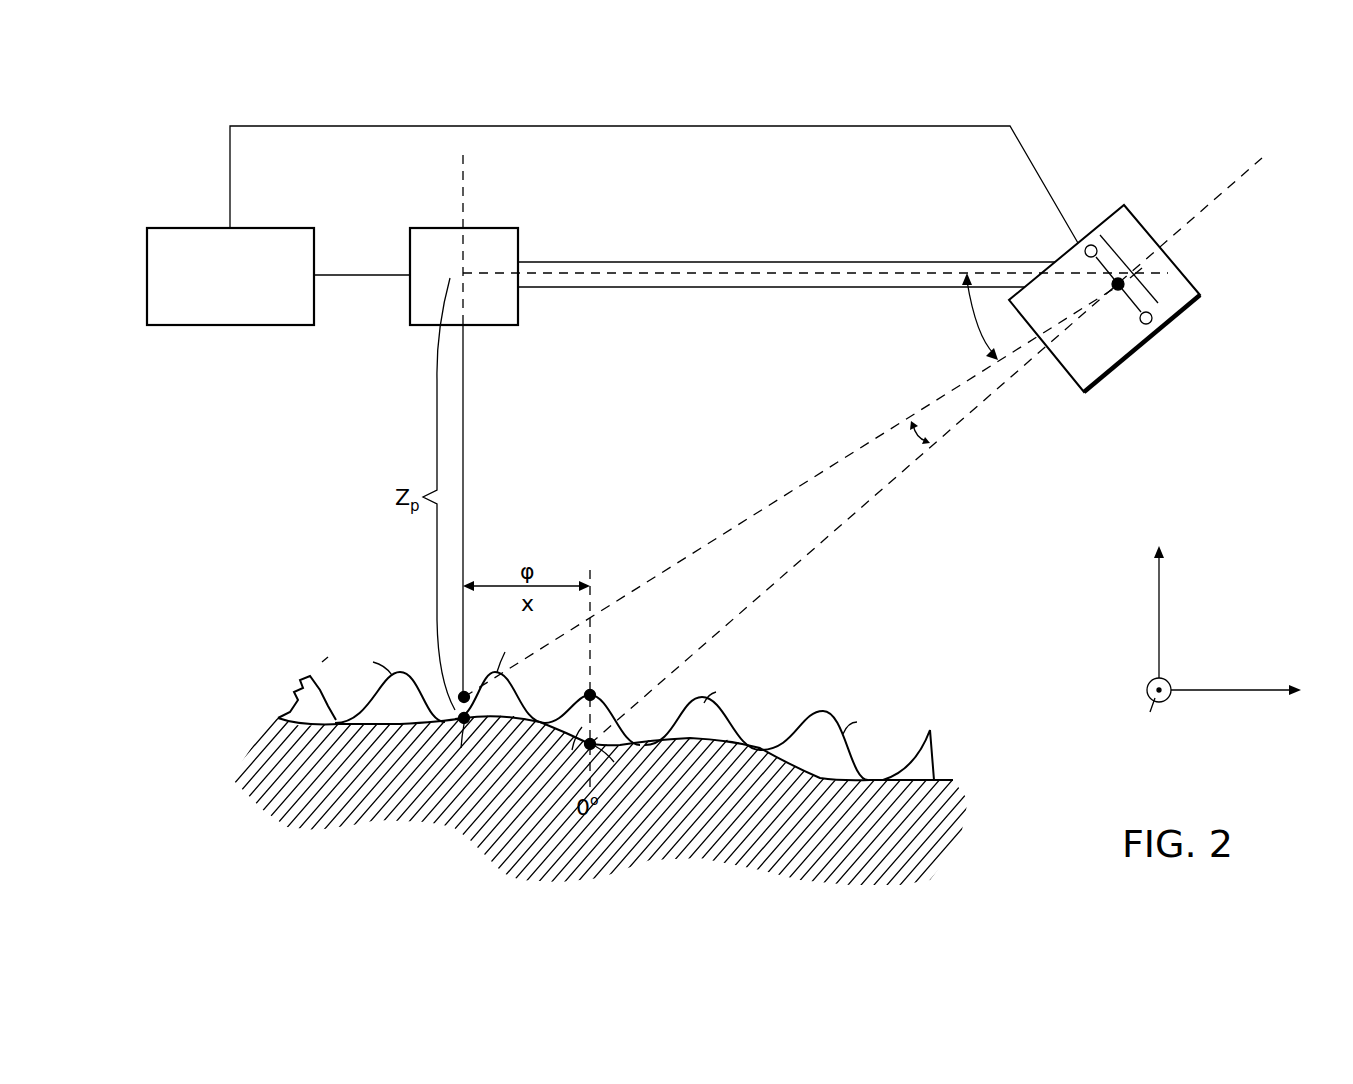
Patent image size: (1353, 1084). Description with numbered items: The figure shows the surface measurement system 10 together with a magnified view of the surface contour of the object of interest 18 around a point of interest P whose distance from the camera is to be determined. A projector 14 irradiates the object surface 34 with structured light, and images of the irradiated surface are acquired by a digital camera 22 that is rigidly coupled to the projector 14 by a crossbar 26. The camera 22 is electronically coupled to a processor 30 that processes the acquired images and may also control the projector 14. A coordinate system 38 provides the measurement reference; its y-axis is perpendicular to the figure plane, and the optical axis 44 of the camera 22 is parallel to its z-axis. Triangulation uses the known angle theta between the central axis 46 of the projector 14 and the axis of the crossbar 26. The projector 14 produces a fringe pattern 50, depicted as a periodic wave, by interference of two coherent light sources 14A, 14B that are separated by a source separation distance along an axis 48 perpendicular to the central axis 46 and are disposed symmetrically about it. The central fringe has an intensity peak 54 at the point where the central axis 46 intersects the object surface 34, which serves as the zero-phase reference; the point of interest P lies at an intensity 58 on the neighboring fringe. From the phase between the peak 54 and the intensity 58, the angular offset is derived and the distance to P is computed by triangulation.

The surface measurement system 10 is at (121, 168).
The projector 14 is at (1107, 379).
The coherent light source 14A is at (1091, 244).
The coherent light source 14B is at (1152, 324).
The object of interest 18 is at (567, 859).
The digital camera 22 is at (410, 238).
The crossbar 26 is at (675, 288).
The processor 30 is at (225, 325).
The object surface 34 is at (965, 768).
The coordinate system 38 is at (1251, 582).
The optical axis 44 is at (463, 180).
The central axis 46 is at (1245, 178).
The axis 48 is at (1118, 292).
The fringe pattern 50 is at (772, 707).
The intensity peak 54 is at (593, 693).
The intensity 58 is at (466, 694).